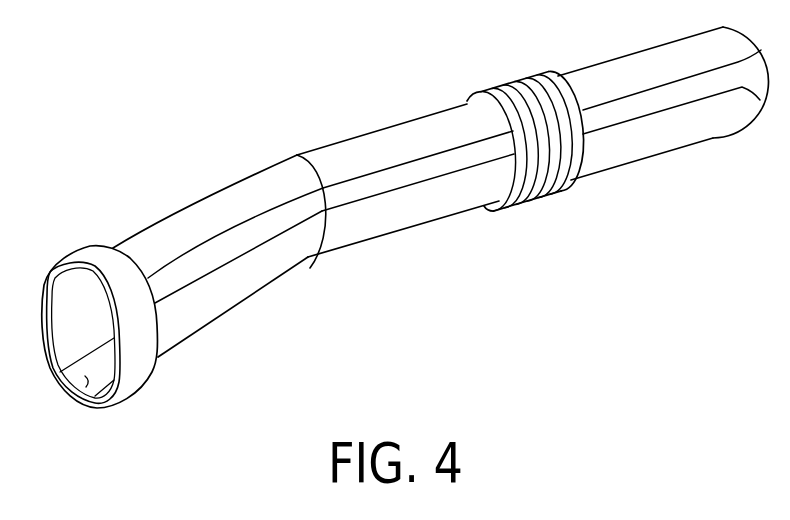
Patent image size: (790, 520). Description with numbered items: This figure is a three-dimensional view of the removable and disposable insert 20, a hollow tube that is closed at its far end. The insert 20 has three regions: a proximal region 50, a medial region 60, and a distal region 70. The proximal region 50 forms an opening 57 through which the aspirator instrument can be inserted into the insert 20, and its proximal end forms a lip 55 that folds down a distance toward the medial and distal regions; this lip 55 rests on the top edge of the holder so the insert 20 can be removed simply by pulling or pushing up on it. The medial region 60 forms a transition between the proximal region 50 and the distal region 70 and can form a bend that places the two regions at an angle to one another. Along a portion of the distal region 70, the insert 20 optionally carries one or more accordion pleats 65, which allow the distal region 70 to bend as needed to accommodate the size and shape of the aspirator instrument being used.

The removable and disposable insert 20 is at (389, 112).
The proximal region 50 is at (257, 293).
The lip 55 is at (97, 244).
The opening 57 is at (83, 397).
The medial region 60 is at (307, 259).
The accordion pleats 65 is at (513, 80).
The distal region 70 is at (717, 139).